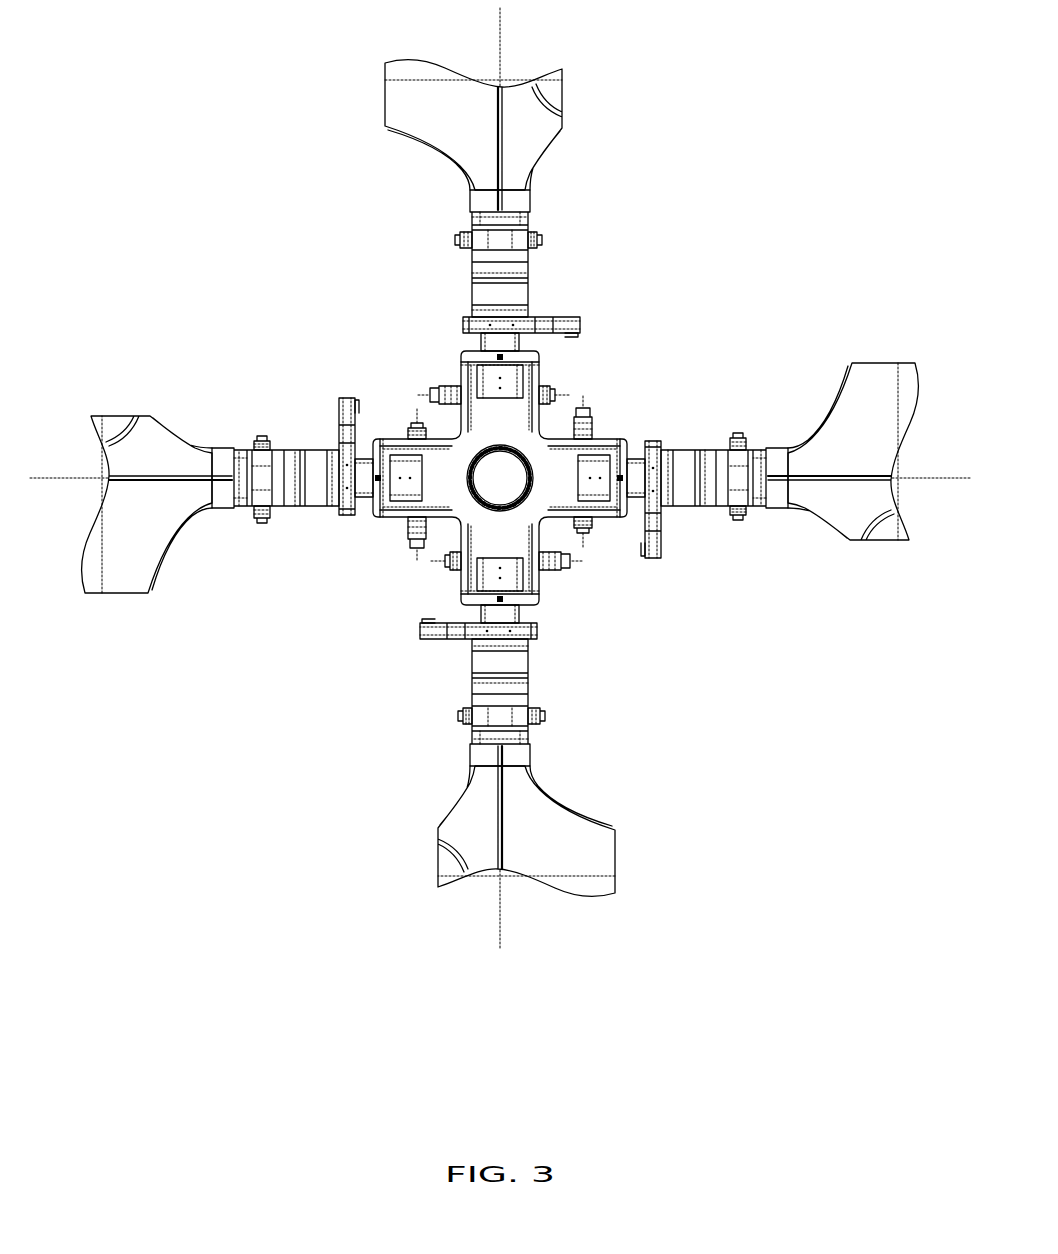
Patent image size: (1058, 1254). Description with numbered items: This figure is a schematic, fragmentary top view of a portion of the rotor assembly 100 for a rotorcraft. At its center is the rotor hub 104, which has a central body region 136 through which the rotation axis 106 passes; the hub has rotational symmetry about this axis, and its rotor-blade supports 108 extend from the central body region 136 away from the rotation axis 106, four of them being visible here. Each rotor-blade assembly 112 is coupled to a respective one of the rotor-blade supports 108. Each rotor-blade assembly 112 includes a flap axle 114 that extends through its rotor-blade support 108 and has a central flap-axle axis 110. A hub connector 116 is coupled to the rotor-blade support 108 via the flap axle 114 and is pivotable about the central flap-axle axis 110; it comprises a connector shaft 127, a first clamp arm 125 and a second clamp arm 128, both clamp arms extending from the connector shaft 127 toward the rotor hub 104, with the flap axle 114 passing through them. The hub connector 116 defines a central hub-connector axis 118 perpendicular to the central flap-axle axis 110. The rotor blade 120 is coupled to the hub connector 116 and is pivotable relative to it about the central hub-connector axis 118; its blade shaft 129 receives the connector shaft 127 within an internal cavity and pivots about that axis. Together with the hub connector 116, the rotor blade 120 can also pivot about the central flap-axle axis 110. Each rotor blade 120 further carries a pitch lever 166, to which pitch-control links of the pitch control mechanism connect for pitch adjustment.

The rotor assembly 100 is at (500, 475).
The rotor hub 104 is at (514, 465).
The rotation axis 106 is at (503, 480).
The rotor-blade supports 108 is at (481, 427).
The central flap-axle axis 110 is at (428, 392).
The rotor-blade assemblies 112 is at (500, 478).
The flap axle 114 is at (462, 362).
The hub connector 116 is at (462, 362).
The central hub-connector axis 118 is at (516, 24).
The rotor blade 120 is at (378, 98).
The first clamp arm 125 is at (570, 336).
The connector shaft 127 is at (462, 350).
The second clamp arm 128 is at (458, 385).
The blade shaft 129 is at (528, 293).
The central body region 136 is at (565, 356).
The pitch lever 166 is at (553, 316).